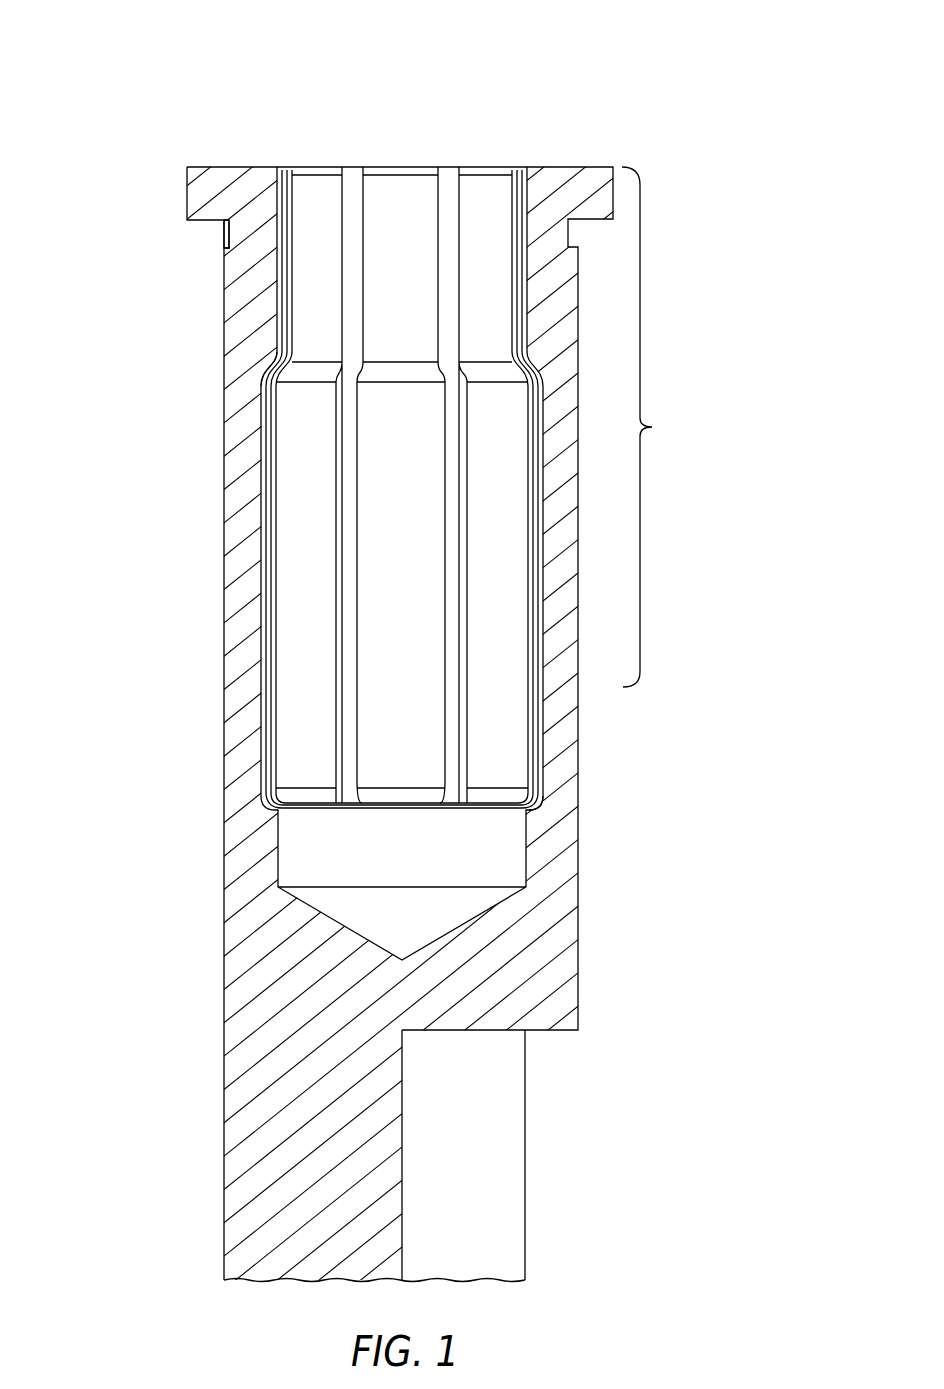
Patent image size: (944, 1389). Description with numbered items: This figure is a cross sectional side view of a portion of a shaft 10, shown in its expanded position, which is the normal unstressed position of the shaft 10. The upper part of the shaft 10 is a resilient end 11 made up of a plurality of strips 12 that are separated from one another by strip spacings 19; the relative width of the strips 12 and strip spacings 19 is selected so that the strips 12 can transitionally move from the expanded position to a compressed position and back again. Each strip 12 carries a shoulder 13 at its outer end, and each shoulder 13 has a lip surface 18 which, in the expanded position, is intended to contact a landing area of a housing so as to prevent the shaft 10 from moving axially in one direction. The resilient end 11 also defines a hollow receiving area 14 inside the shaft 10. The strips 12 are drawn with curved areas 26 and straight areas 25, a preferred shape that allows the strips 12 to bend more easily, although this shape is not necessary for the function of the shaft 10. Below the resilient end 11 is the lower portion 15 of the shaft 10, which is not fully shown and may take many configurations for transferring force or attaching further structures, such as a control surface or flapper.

The shaft 10 is at (157, 109).
The resilient end 11 is at (650, 427).
The strips 12 is at (318, 180).
The shoulder 13 is at (192, 180).
The hollow receiving area 14 is at (442, 130).
The lower portion 15 is at (224, 1153).
The lip surface 18 is at (202, 224).
The strip spacings 19 is at (442, 597).
The straight areas 25 is at (265, 728).
The curved areas 26 is at (270, 365).